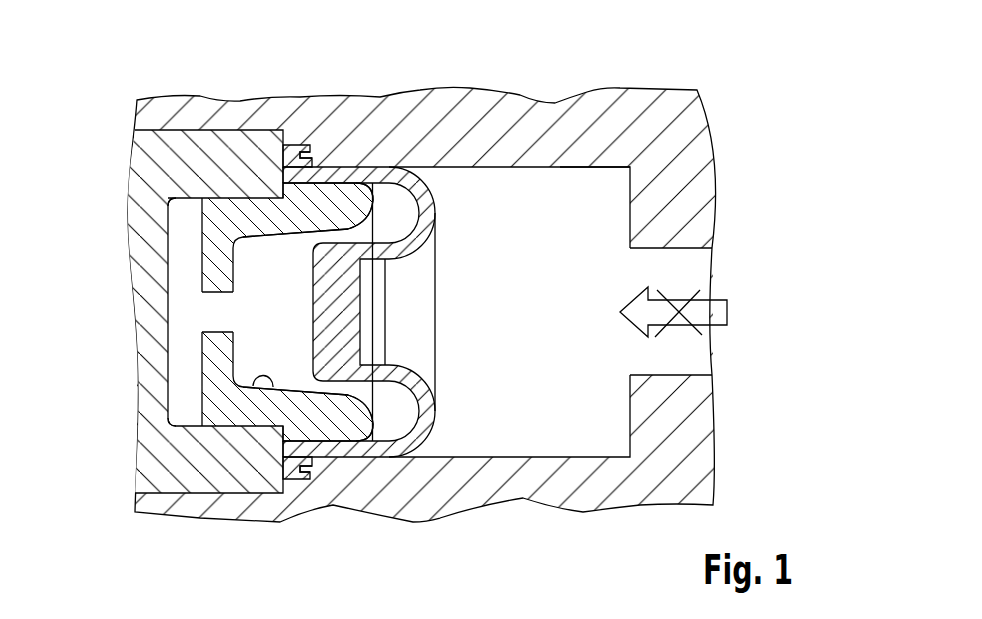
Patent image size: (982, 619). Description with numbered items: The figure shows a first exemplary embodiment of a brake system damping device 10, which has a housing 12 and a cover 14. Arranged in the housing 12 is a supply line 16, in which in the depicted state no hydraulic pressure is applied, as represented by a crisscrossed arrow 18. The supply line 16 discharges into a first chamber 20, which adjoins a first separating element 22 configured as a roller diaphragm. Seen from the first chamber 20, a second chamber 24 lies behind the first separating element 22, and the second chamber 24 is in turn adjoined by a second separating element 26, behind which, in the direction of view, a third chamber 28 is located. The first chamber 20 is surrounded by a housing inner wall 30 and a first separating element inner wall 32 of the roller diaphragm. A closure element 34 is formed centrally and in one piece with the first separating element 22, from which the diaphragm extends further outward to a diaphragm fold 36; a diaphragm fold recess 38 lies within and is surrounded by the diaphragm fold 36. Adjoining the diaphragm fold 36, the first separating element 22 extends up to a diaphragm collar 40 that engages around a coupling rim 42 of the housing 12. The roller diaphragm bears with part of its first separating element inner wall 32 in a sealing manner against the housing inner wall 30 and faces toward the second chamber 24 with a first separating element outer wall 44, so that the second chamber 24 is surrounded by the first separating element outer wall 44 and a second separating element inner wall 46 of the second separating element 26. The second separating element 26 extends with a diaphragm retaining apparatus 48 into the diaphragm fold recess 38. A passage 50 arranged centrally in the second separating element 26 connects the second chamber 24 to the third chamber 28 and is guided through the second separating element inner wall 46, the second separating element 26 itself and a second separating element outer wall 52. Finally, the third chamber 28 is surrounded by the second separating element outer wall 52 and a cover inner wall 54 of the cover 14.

The brake system damping device 10 is at (728, 90).
The housing 12 is at (697, 128).
The cover 14 is at (210, 317).
The supply line 16 is at (697, 268).
The crisscrossed arrow 18 is at (712, 313).
The first chamber 20 is at (612, 430).
The first separating element 22 is at (340, 178).
The second chamber 24 is at (265, 284).
The second separating element 26 is at (183, 212).
The third chamber 28 is at (183, 255).
The housing inner wall 30 is at (591, 168).
The first separating element inner wall 32 is at (358, 297).
The closure element 34 is at (352, 337).
The diaphragm fold 36 is at (428, 207).
The diaphragm fold recess 38 is at (396, 223).
The diaphragm collar 40 is at (303, 150).
The coupling rim 42 is at (316, 152).
The first separating element outer wall 44 is at (308, 300).
The second separating element inner wall 46 is at (258, 383).
The diaphragm retaining apparatus 48 is at (365, 198).
The passage 50 is at (170, 328).
The second separating element outer wall 52 is at (200, 387).
The cover inner wall 54 is at (175, 405).